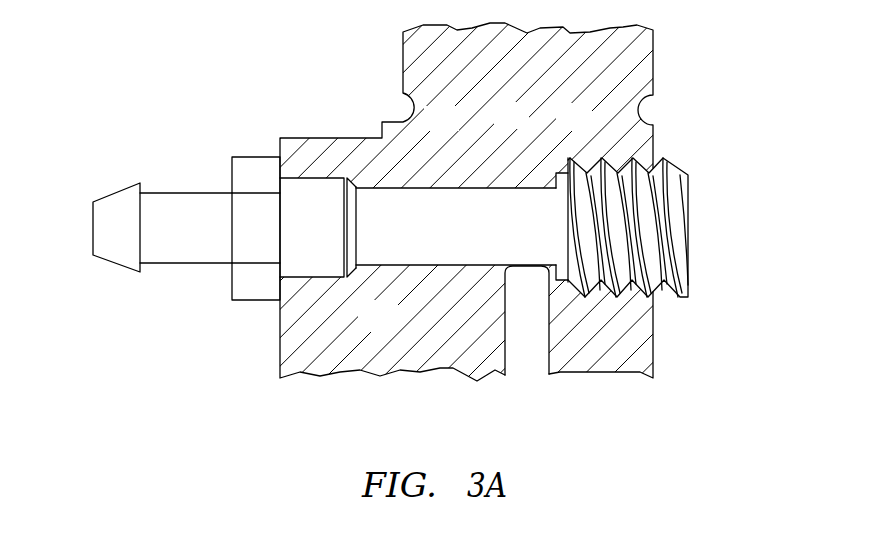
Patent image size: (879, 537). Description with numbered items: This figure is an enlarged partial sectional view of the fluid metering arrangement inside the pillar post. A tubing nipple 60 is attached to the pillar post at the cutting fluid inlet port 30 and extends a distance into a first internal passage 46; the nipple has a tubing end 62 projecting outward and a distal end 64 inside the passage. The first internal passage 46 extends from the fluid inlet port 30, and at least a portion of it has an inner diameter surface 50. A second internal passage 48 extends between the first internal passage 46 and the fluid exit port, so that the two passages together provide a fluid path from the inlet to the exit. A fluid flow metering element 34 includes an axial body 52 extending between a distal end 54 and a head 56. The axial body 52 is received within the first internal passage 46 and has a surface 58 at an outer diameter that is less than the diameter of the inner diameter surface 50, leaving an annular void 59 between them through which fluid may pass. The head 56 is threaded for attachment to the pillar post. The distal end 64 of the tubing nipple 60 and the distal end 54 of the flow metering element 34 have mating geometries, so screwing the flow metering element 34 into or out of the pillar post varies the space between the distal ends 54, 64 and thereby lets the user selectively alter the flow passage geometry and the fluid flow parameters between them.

The cutting fluid inlet port 30 is at (279, 271).
The fluid flow metering element 34 is at (689, 154).
The first internal passage 46 is at (405, 187).
The second internal passage 48 is at (538, 362).
The inner diameter surface 50 is at (452, 196).
The axial body 52 is at (518, 244).
The distal end 54 is at (342, 216).
The head 56 is at (688, 269).
The surface 58 is at (500, 187).
The annular void 59 is at (538, 187).
The tubing nipple 60 is at (176, 277).
The tubing end 62 is at (102, 258).
The distal end 64 is at (357, 234).